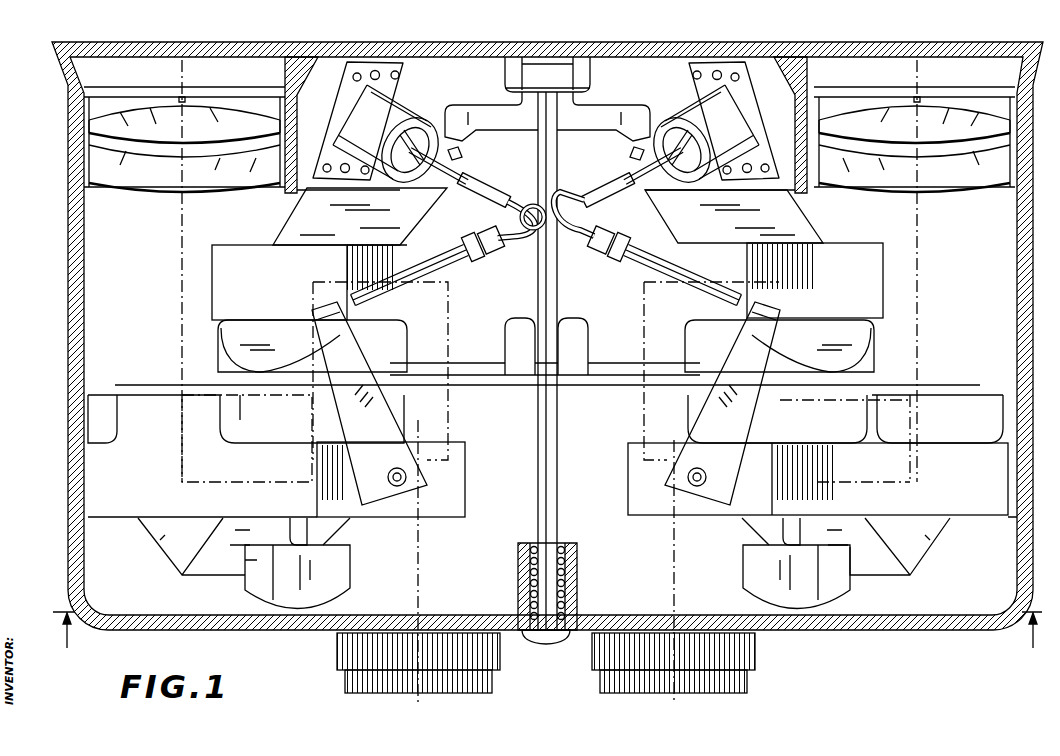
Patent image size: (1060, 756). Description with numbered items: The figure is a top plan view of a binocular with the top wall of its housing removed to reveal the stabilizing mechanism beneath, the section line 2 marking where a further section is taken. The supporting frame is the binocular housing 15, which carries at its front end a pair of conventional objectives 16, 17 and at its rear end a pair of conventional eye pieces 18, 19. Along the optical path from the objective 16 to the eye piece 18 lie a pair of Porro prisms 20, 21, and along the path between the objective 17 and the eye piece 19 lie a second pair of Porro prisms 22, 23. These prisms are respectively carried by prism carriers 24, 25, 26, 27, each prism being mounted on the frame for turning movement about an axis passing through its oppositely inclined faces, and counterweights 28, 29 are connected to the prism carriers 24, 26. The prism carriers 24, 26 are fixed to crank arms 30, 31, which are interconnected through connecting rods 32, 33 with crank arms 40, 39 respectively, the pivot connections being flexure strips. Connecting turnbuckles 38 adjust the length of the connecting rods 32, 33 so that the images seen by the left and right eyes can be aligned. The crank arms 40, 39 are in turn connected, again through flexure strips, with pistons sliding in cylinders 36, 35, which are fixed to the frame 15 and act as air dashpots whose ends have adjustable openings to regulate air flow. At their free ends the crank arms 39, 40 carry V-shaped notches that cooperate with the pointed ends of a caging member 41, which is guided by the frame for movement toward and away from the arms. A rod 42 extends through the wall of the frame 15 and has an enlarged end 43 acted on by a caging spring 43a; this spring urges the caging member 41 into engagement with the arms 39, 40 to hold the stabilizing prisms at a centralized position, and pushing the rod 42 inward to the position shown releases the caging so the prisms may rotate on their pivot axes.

The section line 2- 2 is at (547, 637).
The binocular housing 15 is at (68, 352).
The objective 16 is at (88, 157).
The objective 17 is at (981, 182).
The eye piece 18 is at (340, 650).
The eye piece 19 is at (750, 650).
The Porro prism 20 is at (168, 547).
The Porro prism 21 is at (293, 218).
The Porro prism 22 is at (920, 553).
The Porro prism 23 is at (797, 219).
The prism carrier 24 is at (228, 466).
The prism carrier 25 is at (272, 283).
The prism carrier 26 is at (865, 471).
The prism carrier 27 is at (832, 285).
The counterweight 28 is at (342, 583).
The counterweight 29 is at (747, 575).
The crank arm 30 is at (393, 420).
The crank arm 31 is at (707, 422).
The connecting rod 32 is at (428, 269).
The connecting rod 33 is at (680, 267).
The cylinder 35 is at (380, 127).
The cylinder 36 is at (735, 123).
The connecting turnbuckle 38 is at (428, 222).
The crank arm 39 is at (468, 158).
The crank arm 40 is at (632, 152).
The caging member 41 is at (608, 113).
The rod 42 is at (553, 529).
The enlarged end 43 is at (526, 640).
The spring 43a is at (573, 577).